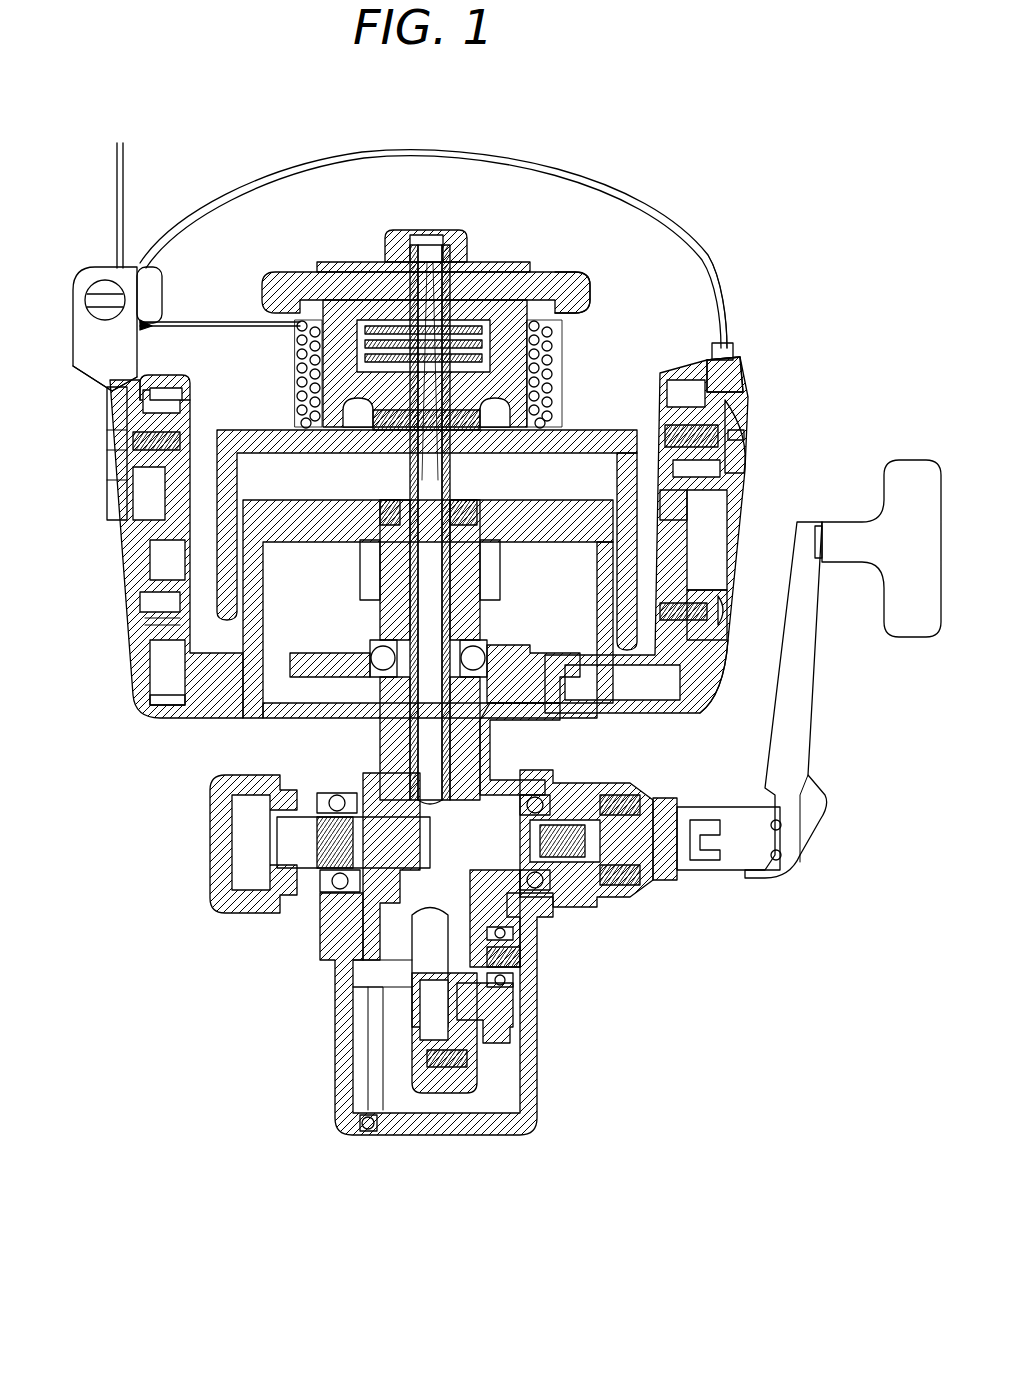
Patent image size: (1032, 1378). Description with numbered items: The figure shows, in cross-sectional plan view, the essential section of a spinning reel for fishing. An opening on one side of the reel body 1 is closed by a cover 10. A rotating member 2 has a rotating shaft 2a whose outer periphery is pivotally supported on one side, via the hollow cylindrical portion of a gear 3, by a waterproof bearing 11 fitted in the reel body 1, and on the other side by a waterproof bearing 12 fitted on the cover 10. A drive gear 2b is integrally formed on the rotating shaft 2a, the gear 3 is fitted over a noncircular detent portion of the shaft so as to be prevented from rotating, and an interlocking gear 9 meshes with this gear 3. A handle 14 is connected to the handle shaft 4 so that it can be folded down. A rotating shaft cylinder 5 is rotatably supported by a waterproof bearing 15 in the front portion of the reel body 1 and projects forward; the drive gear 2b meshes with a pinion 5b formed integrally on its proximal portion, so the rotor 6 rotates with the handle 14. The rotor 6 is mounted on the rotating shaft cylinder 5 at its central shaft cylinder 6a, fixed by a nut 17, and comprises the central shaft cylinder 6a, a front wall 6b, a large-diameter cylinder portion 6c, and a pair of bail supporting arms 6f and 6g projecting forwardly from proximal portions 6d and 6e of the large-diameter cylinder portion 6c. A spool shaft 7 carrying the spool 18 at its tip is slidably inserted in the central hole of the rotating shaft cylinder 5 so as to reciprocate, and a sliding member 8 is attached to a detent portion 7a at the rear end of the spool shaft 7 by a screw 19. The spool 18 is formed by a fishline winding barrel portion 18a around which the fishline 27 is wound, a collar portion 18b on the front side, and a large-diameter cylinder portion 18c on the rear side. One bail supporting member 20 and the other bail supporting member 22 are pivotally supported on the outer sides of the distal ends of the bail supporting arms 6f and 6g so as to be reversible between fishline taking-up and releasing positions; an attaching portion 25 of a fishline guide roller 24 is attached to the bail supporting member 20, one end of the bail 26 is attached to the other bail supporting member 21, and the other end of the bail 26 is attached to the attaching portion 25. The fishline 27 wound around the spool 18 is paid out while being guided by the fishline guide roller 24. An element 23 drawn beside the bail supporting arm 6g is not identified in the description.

The reel body 1 is at (433, 1002).
The rotating member 2 is at (401, 873).
The rotating shaft 2a is at (587, 905).
The drive gear 2b is at (370, 943).
The gear 3 is at (497, 790).
The handle shaft 4 is at (652, 882).
The rotating shaft cylinder 5 is at (444, 517).
The pinion 5b is at (435, 662).
The rotor 6 is at (442, 530).
The central shaft cylinder 6a is at (362, 530).
The front wall 6b is at (266, 537).
The large-diameter cylinder portion 6c is at (615, 557).
The proximal portion 6d is at (195, 726).
The proximal portion 6e is at (690, 722).
The bail supporting arm 6f is at (162, 378).
The bail supporting arm 6g is at (690, 372).
The spool shaft 7 is at (410, 977).
The detent portion 7a is at (380, 996).
The sliding member 8 is at (405, 1032).
The interlocking gear 9 is at (496, 1052).
The cover 10 is at (333, 1099).
The waterproof bearing 11 is at (545, 908).
The waterproof bearing 12 is at (333, 903).
The handle 14 is at (810, 765).
The waterproof bearing 15 is at (368, 652).
The nut 17 is at (380, 512).
The spool 18 is at (572, 258).
The fishline winding barrel portion 18a is at (556, 350).
The collar portion 18b is at (612, 262).
The large-diameter cylinder portion 18c is at (655, 505).
The screw 19 is at (420, 1063).
The bail supporting member 20 is at (108, 375).
The bail supporting member 21 is at (742, 370).
The bail supporting member 22 is at (115, 455).
The cover 23 is at (745, 418).
The fishline guide roller 24 is at (112, 268).
The attaching portion 25 is at (160, 292).
The bail 26 is at (706, 252).
The fishline 27 is at (126, 170).